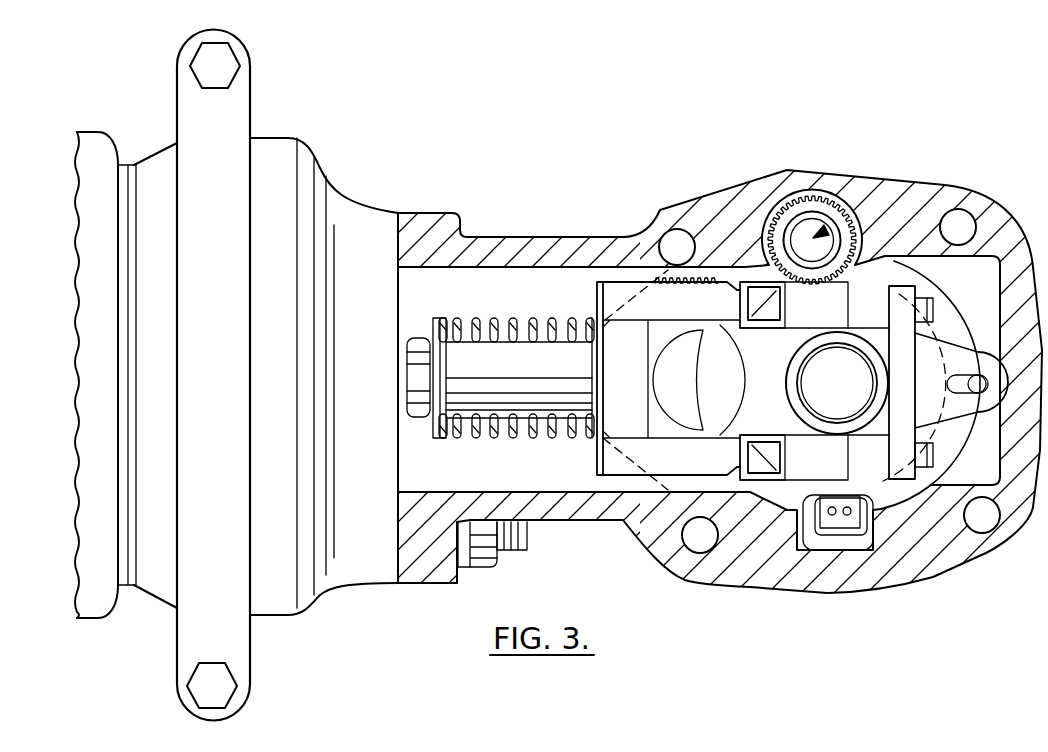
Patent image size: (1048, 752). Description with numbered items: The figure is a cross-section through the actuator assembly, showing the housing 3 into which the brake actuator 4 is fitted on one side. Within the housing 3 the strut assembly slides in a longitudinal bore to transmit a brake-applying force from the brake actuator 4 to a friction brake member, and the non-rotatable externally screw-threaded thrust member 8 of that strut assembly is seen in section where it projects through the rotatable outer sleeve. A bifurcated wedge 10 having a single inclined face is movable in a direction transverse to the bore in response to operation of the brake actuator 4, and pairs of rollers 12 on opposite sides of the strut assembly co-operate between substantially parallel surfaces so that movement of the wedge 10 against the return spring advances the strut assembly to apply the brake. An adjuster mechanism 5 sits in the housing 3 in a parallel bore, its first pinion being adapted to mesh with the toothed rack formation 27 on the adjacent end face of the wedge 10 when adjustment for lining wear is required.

The housing 3 is at (900, 216).
The brake actuator 4 is at (336, 220).
The adjuster mechanism 5 is at (822, 232).
The thrust member 8 is at (843, 388).
The bifurcated wedge 10 is at (672, 482).
The rollers 12 is at (772, 307).
The toothed rack formation 27 is at (652, 276).